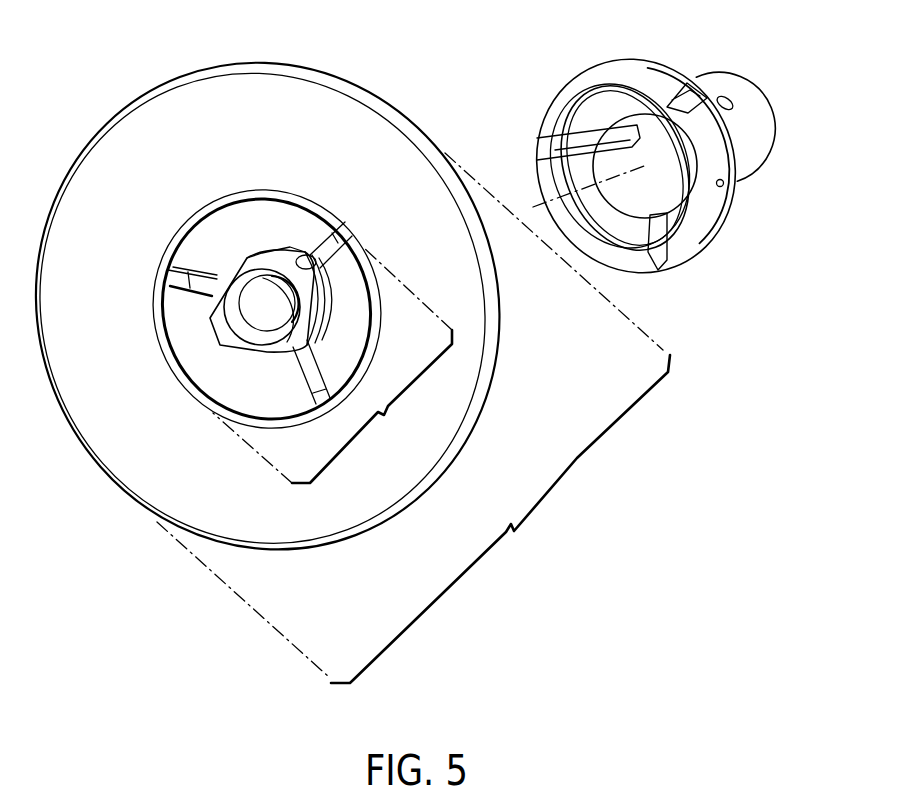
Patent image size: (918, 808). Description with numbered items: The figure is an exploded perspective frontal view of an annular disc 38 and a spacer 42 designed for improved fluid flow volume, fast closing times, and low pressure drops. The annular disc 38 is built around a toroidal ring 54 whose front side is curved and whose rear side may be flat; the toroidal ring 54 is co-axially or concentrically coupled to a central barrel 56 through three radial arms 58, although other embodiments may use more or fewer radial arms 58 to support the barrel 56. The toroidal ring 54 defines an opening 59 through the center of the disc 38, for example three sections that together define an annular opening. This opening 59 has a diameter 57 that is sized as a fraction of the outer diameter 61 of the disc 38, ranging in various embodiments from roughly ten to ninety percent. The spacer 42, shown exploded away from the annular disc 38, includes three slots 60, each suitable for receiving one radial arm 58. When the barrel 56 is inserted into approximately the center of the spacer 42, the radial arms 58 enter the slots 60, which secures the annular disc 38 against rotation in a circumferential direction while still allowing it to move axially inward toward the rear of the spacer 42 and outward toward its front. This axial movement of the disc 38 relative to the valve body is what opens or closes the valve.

The annular disc 38 is at (352, 57).
The spacer 42 is at (550, 57).
The toroidal ring 54 is at (434, 277).
The barrel 56 is at (236, 350).
The diameter 57 is at (372, 406).
The radial arms 58 is at (212, 278).
The opening 59 is at (209, 356).
The slots 60 is at (693, 98).
The outer diameter 61 is at (413, 418).